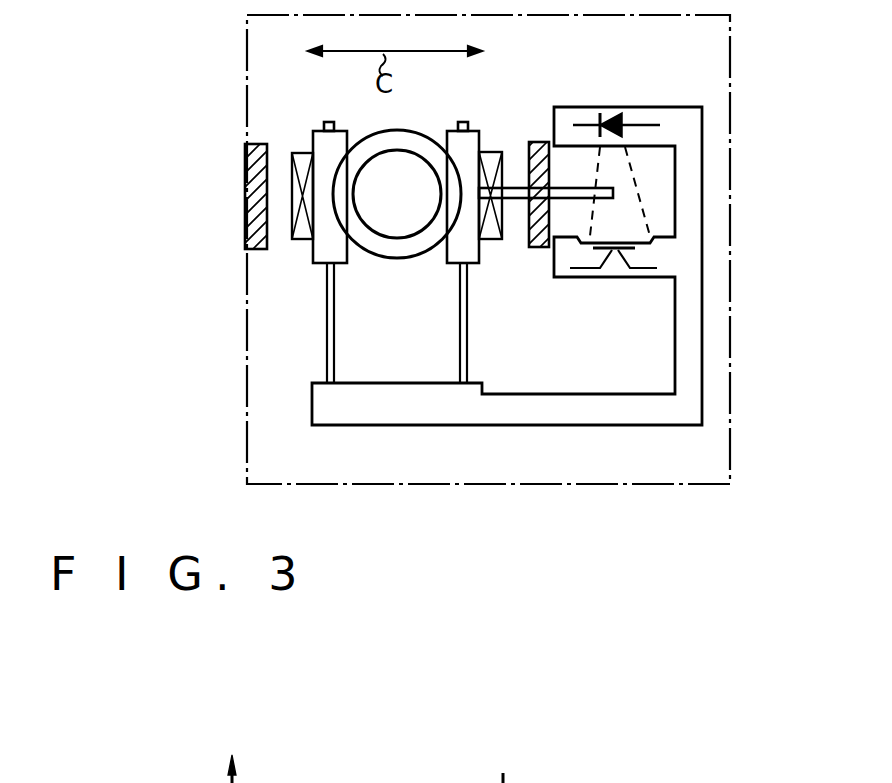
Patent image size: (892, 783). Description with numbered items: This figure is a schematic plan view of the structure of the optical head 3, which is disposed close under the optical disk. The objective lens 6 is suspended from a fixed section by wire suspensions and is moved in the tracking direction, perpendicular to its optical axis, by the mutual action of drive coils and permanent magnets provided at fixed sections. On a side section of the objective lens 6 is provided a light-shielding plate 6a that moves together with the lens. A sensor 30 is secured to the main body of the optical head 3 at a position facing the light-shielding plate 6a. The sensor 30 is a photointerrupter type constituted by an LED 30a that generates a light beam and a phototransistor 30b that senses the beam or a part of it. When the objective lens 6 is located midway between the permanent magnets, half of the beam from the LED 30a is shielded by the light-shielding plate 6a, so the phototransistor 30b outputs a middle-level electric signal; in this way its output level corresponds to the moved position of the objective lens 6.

The optical head 3 is at (732, 345).
The objective lens 6 is at (395, 236).
The light-shielding plate 6a is at (559, 199).
The sensor 30 is at (575, 102).
The LED 30a is at (613, 107).
The phototransistor 30b is at (615, 262).